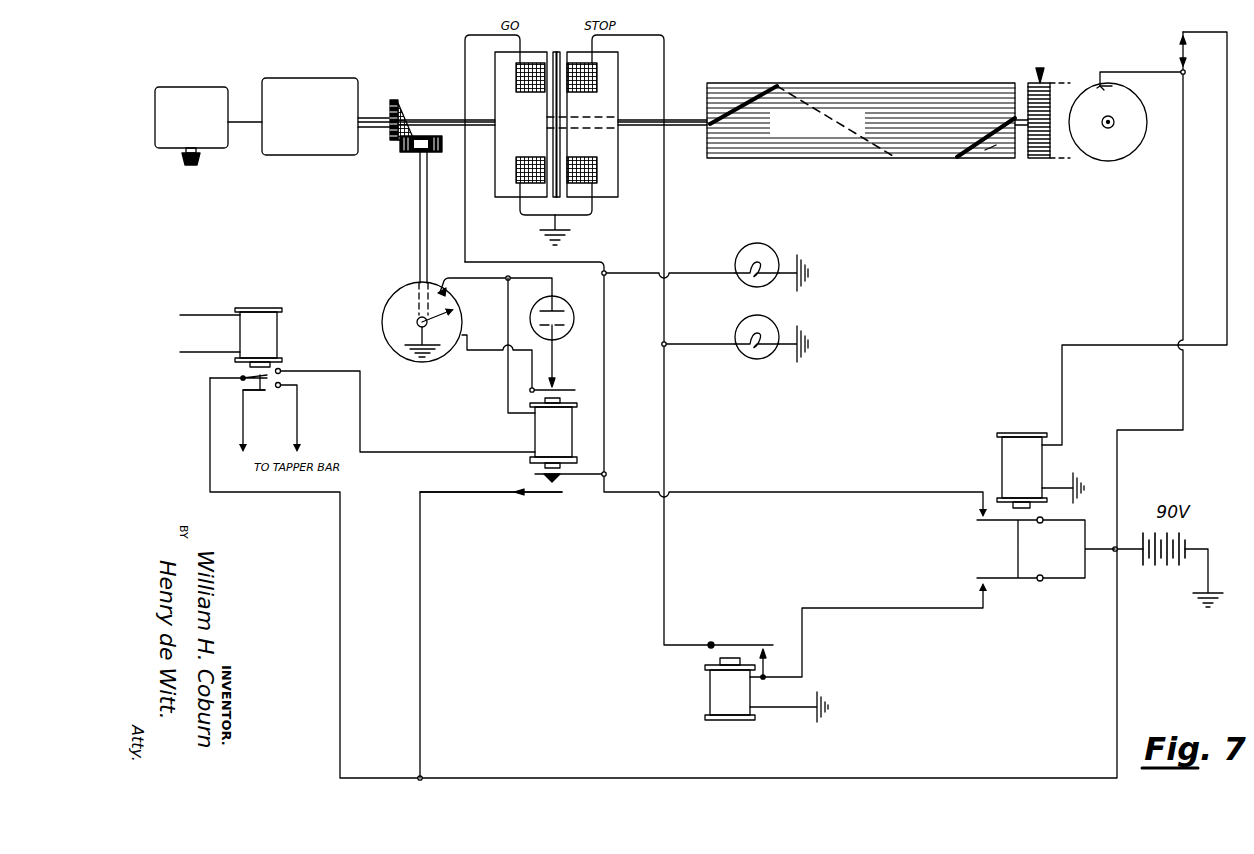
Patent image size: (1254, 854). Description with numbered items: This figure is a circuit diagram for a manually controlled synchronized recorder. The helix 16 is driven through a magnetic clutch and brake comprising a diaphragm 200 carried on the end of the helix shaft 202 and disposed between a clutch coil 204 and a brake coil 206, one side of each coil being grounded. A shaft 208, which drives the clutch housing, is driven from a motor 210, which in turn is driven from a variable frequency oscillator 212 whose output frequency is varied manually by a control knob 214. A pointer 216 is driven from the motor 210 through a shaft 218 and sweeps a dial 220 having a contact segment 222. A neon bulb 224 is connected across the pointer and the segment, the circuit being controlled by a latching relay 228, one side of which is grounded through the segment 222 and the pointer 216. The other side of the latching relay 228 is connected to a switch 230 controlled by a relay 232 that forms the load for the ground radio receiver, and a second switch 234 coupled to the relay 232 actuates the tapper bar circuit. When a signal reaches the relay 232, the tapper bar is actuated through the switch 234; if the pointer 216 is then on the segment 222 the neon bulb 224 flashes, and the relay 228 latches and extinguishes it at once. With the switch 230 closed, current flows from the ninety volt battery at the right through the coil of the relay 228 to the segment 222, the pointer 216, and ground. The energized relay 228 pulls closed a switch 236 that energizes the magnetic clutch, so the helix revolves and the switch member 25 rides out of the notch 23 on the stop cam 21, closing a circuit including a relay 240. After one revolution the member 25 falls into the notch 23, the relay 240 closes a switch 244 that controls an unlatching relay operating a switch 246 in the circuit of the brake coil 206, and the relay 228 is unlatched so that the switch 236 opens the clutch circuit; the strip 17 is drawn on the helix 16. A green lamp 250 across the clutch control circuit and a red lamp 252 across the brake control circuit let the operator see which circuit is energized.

The helix 16 is at (905, 83).
The helix conducting strip 17 is at (995, 152).
The stop cam 21 is at (1042, 159).
The notch 23 is at (1112, 87).
The switch member 25 is at (1043, 72).
The diaphragm 200 is at (556, 51).
The helix shaft 202 is at (637, 113).
The clutch coil 204 is at (516, 183).
The brake coil 206 is at (597, 183).
The shaft 208 is at (432, 118).
The motor 210 is at (310, 82).
The variable frequency oscillator 212 is at (173, 90).
The control knob 214 is at (200, 160).
The pointer 216 is at (437, 312).
The shaft 218 is at (420, 218).
The dial 220 is at (392, 322).
The contact segment 222 is at (447, 291).
The neon bulb 224 is at (560, 301).
The latching relay 228 is at (565, 433).
The switch 230 is at (235, 376).
The relay 232 is at (278, 341).
The second switch 234 is at (265, 393).
The switch 236 is at (552, 495).
The relay 240 is at (1002, 456).
The switch 244 is at (1000, 581).
The switch 246 is at (745, 645).
The lamp 250 is at (779, 256).
The red lamp 252 is at (779, 326).